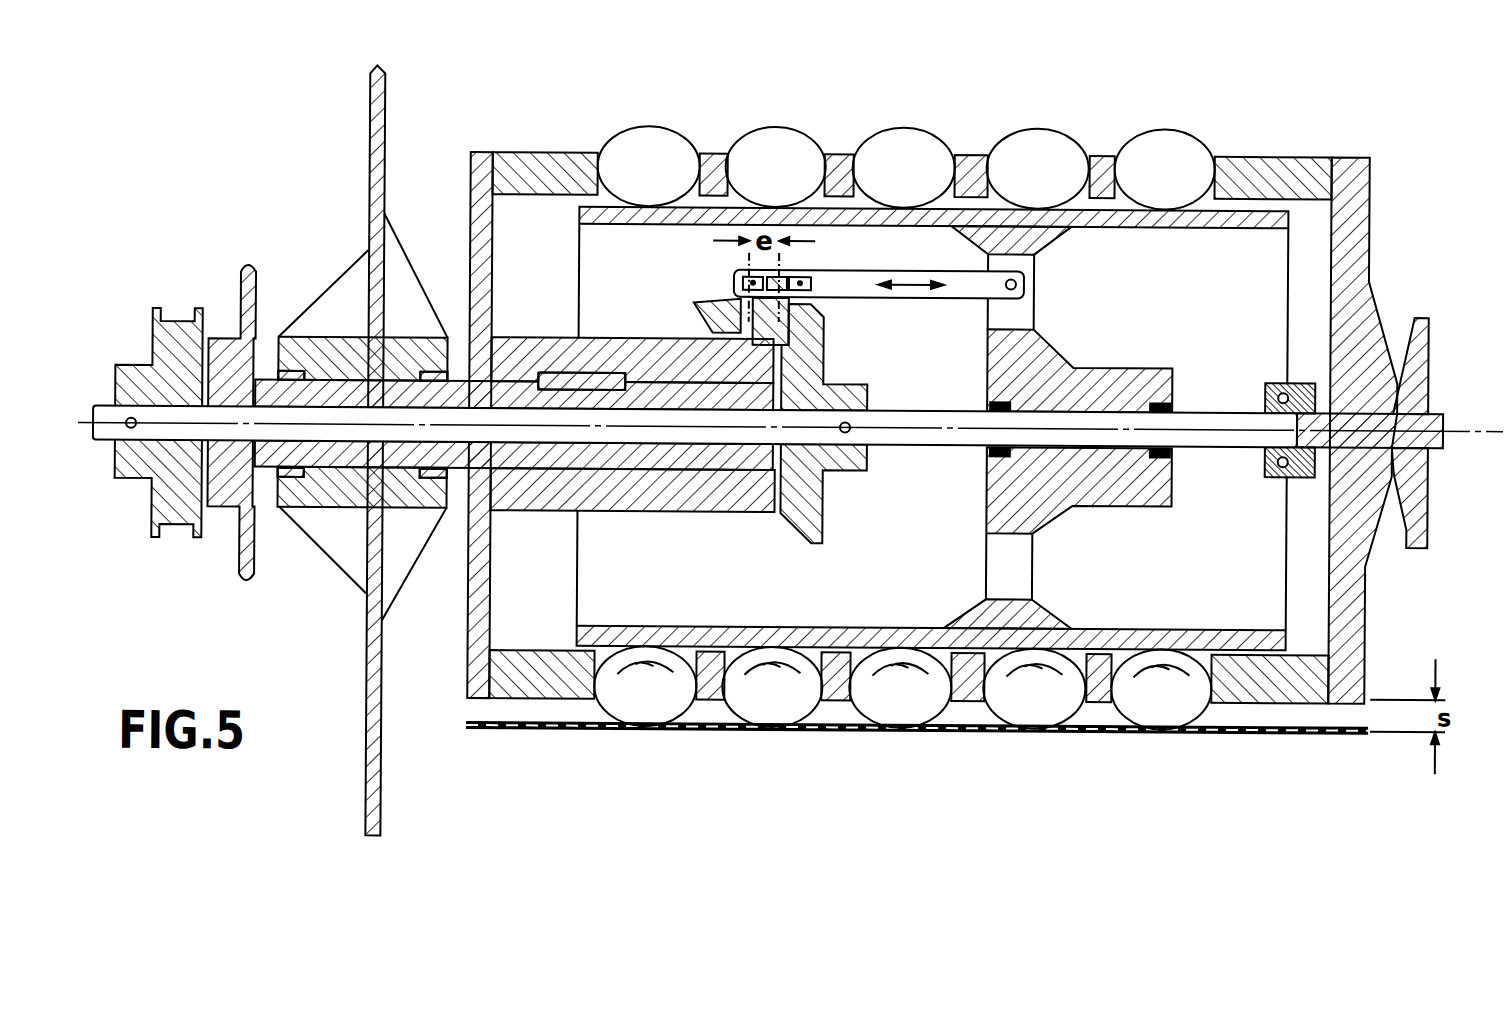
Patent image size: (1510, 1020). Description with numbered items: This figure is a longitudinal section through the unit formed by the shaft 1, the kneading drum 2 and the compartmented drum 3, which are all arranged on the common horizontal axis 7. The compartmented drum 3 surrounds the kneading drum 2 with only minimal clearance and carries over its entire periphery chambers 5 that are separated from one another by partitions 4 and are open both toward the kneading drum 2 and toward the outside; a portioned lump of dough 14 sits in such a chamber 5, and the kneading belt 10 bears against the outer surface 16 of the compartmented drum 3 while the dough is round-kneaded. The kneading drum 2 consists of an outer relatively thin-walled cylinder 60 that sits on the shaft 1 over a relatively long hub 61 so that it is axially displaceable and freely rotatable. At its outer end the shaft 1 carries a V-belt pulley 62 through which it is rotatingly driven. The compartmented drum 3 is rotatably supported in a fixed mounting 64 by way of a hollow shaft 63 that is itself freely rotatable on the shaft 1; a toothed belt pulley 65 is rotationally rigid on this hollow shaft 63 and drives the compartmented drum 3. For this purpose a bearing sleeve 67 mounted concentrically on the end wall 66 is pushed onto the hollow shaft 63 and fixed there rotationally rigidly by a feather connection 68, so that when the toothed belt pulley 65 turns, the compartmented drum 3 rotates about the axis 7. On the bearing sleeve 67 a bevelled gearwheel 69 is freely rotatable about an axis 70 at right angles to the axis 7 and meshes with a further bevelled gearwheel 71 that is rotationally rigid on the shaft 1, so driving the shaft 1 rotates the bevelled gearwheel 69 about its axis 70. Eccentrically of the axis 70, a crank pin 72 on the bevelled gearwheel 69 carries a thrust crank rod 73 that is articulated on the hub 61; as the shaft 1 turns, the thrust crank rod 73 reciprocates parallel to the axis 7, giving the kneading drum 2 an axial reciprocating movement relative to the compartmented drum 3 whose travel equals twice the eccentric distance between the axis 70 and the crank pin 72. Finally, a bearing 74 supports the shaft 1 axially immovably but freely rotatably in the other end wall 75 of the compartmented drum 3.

The shaft 1 is at (893, 411).
The kneading drum 2 is at (1220, 612).
The compartmented drum 3 is at (1376, 187).
The partitions 4 is at (710, 165).
The chambers 5 is at (588, 164).
The axis 7 is at (943, 411).
The kneading belt 10 is at (958, 731).
The dough portion 14 is at (1015, 158).
The outer surface 16 is at (1280, 700).
The cylinder 60 is at (1222, 214).
The hub 61 is at (1128, 386).
The V-belt pulley 62 is at (183, 521).
The hollow shaft 63 is at (697, 458).
The fixed mounting 64 is at (345, 486).
The toothed belt pulley 65 is at (238, 538).
The end wall 66 is at (489, 580).
The bearing sleeve 67 is at (627, 492).
The feather connection 68 is at (560, 378).
The bevelled gearwheel 69 is at (694, 300).
The axis 70 is at (713, 294).
The bevelled gearwheel 71 is at (822, 341).
The crank pin 72 is at (786, 275).
The thrust crank rod 73 is at (912, 276).
The bearing 74 is at (1267, 384).
The end wall 75 is at (1349, 617).